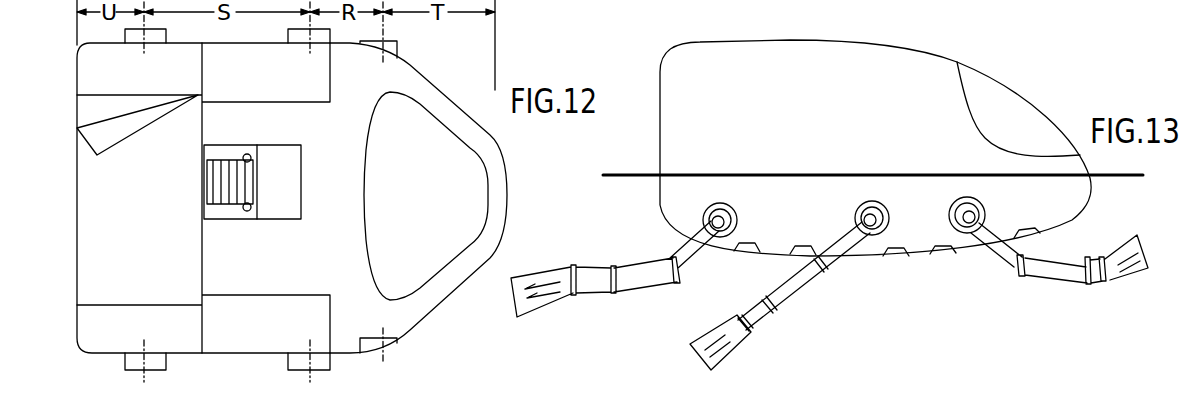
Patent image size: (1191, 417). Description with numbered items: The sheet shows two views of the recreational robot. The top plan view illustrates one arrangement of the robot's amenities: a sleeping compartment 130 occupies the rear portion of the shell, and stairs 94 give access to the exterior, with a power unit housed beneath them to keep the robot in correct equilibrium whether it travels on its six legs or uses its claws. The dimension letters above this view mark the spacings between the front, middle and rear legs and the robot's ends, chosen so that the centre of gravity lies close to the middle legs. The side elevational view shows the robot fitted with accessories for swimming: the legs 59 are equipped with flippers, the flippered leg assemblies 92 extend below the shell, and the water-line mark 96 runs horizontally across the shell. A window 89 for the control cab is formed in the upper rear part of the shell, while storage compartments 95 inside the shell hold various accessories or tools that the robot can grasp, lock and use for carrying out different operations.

In FIG. 12, the sleeping compartment 130 is at (113, 172).
In FIG. 12, the stairs 94 is at (226, 190).
In FIG. 13, the window 89 is at (1017, 120).
In FIG. 13, the water-line mark 96 is at (617, 176).
In FIG. 13, the storage compartments 95 is at (896, 250).
In FIG. 13, the suction hose with nozzle 92 is at (563, 276).
In FIG. 13, the legs 59 is at (999, 248).